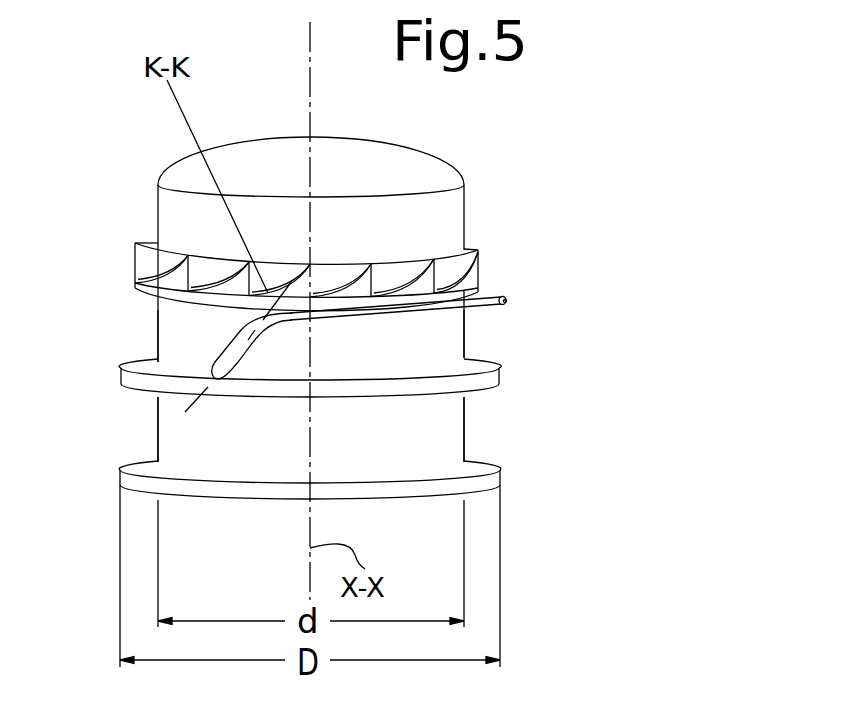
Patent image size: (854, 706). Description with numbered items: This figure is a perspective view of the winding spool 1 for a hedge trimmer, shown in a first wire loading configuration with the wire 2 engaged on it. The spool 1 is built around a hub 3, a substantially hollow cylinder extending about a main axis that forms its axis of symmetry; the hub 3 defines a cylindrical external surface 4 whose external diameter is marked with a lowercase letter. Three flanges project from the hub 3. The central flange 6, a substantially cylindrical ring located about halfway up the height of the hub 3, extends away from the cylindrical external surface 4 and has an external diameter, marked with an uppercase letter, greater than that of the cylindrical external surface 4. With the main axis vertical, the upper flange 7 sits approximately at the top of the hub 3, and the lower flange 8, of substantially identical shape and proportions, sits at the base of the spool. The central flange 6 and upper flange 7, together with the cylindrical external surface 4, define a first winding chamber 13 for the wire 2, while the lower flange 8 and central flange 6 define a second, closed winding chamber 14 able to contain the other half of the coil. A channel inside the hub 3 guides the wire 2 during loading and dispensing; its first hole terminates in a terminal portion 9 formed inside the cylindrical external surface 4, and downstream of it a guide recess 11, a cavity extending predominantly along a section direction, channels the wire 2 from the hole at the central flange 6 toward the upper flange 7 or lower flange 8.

The winding spool 1 is at (613, 195).
The wire 2 is at (500, 293).
The hub 3 is at (500, 424).
The cylindrical external surface 4 is at (390, 445).
The central flange 6 is at (490, 378).
The upper flange 7 is at (153, 292).
The lower flange 8 is at (130, 480).
The terminal portion 9 is at (213, 365).
The guide recess 11 is at (255, 358).
The first winding chamber 13 is at (103, 372).
The second winding chamber 14 is at (103, 476).